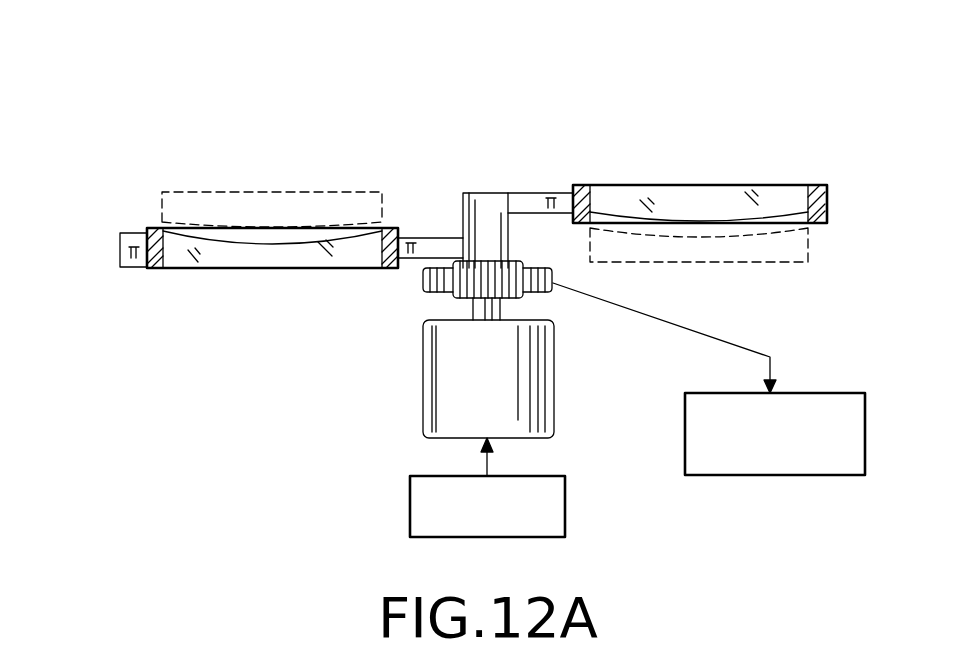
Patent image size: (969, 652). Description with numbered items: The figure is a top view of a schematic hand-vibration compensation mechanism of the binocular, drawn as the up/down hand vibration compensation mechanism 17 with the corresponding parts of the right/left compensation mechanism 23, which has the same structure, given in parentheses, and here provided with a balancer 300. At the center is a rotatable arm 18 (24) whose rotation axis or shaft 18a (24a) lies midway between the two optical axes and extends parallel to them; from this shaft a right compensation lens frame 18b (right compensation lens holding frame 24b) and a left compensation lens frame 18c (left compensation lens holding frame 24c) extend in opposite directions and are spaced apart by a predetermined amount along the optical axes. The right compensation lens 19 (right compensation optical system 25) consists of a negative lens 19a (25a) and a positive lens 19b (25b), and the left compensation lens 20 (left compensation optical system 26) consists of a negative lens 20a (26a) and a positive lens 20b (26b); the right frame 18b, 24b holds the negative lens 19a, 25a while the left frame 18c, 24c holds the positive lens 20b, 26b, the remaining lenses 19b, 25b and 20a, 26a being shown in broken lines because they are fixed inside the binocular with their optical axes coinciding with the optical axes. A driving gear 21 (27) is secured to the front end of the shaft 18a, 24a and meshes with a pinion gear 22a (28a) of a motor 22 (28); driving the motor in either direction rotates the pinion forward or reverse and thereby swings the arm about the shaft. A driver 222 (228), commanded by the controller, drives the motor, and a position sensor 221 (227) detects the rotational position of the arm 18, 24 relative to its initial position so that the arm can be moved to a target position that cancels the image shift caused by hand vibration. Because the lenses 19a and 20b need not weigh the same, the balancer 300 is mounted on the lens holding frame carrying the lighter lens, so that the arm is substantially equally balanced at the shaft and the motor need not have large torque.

The right compensation lens 19 is at (264, 139).
The right compensation optical system 25 is at (266, 156).
The negative lens 19a is at (258, 180).
The negative lens 25a is at (220, 252).
The positive lens 19b is at (272, 163).
The positive lens 25b is at (278, 214).
The rotatable arm 18 is at (473, 139).
The rotatable arm 24 is at (474, 155).
The rotation axis (shaft) 18a is at (476, 182).
The shaft 24a is at (508, 228).
The right compensation lens frame 18b is at (407, 177).
The right compensation lens holding frame 24b is at (433, 247).
The left compensation lens frame 18c is at (552, 155).
The left compensation lens holding frame 24c is at (547, 205).
The left compensation lens 20 is at (700, 135).
The left compensation optical system 26 is at (700, 152).
The negative lens 20a is at (699, 179).
The negative lens 26a is at (686, 232).
The positive lens 20b is at (704, 159).
The positive lens 26b is at (768, 205).
The balancer 300 is at (124, 268).
The driving gear 21 is at (421, 304).
The driving gear 27 is at (423, 280).
The pinion gear 22a is at (416, 354).
The pinion gear 28a is at (467, 303).
The motor 22 is at (531, 394).
The motor 28 is at (533, 396).
The up/down hand vibration compensation mechanism 17 is at (499, 239).
The right/left compensation mechanism 23 is at (499, 239).
The driver 222 is at (436, 487).
The driver 228 is at (410, 508).
The position sensor 221 is at (709, 421).
The position sensor 227 is at (745, 476).